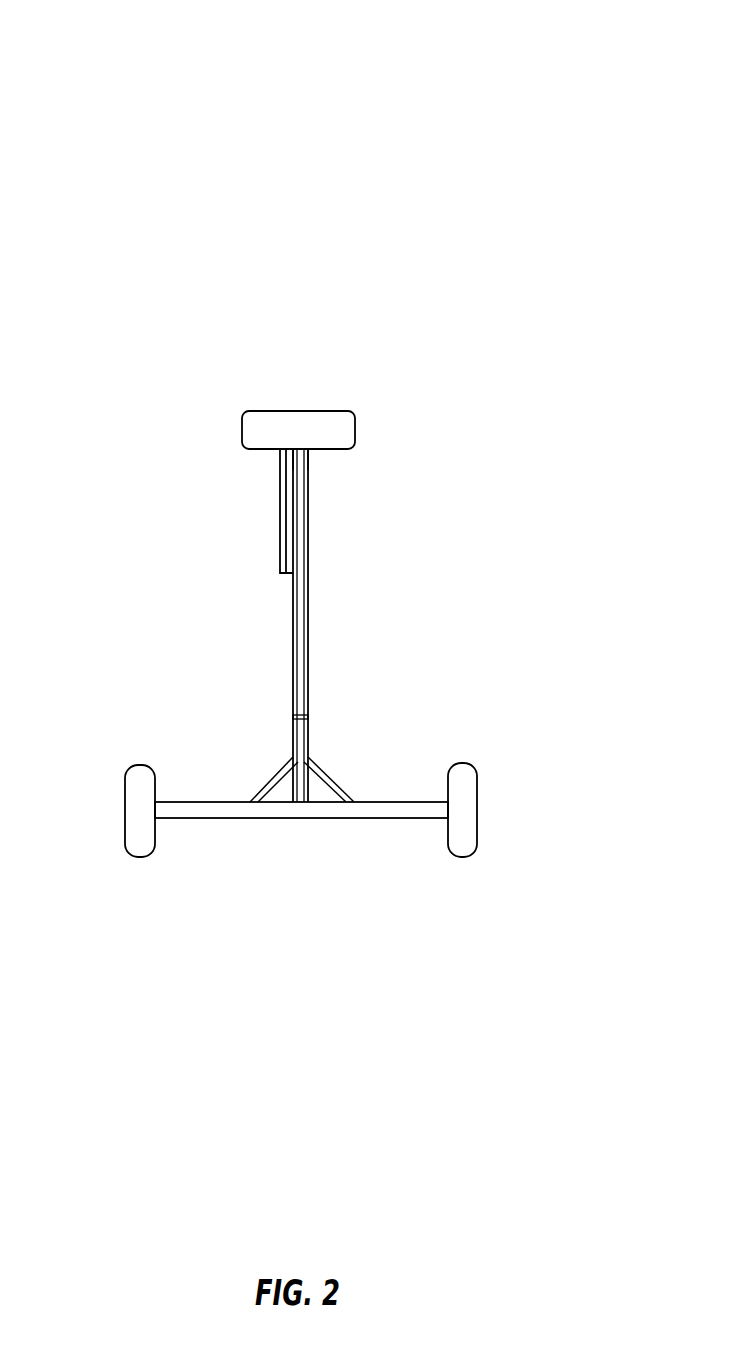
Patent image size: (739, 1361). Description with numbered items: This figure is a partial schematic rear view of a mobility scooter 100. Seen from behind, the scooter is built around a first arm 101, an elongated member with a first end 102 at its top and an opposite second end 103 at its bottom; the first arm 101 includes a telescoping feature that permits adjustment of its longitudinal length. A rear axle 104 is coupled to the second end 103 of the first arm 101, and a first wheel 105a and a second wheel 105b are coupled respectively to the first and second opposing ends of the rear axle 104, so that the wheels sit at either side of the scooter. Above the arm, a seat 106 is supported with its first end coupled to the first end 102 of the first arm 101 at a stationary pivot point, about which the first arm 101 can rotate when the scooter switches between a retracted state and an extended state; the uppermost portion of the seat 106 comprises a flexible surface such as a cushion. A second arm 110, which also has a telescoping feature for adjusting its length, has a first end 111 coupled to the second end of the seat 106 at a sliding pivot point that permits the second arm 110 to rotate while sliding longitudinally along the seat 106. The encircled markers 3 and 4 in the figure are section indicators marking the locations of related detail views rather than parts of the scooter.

The mobility scooter 100 is at (585, 150).
The first arm 101 is at (318, 631).
The first end 102 is at (298, 468).
The second end 103 is at (293, 717).
The rear axle 104 is at (285, 820).
The first wheel 105a is at (137, 835).
The second wheel 105b is at (468, 825).
The seat 106 is at (272, 402).
The second arm 110 is at (268, 511).
The first end 111 is at (280, 488).
The section view indicator 3 is at (307, 740).
The section view indicator 4 is at (307, 570).